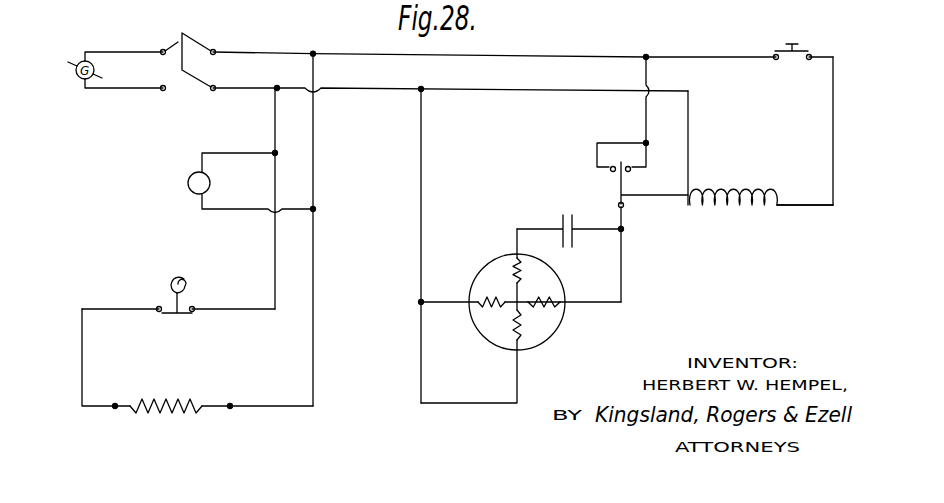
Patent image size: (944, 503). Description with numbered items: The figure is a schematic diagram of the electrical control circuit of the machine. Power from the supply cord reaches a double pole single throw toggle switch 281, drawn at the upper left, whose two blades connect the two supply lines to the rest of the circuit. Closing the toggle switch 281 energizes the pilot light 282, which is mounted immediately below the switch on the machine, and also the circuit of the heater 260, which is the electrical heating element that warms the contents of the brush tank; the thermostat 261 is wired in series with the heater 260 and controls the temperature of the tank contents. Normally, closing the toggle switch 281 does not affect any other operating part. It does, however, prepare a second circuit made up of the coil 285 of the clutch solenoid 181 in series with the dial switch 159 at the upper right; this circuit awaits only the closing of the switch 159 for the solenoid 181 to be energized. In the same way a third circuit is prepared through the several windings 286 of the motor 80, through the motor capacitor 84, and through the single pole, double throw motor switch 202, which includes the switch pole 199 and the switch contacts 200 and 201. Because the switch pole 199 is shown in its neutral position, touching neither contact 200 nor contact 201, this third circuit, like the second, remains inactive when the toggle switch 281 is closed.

The toggle switch 281 is at (197, 42).
The switch 159 is at (825, 29).
The single pole double throw switch 202 is at (618, 142).
The switch contact 200 is at (611, 171).
The switch contact 201 is at (633, 171).
The switch pole 199 is at (628, 188).
The motor capacitor 84 is at (560, 218).
The motor 80 is at (498, 340).
The windings 286 is at (540, 283).
The solenoid 181 is at (735, 192).
The coil 285 is at (762, 190).
The pilot light 282 is at (195, 195).
The thermostat 261 is at (190, 298).
The electrical heating element 260 is at (183, 400).